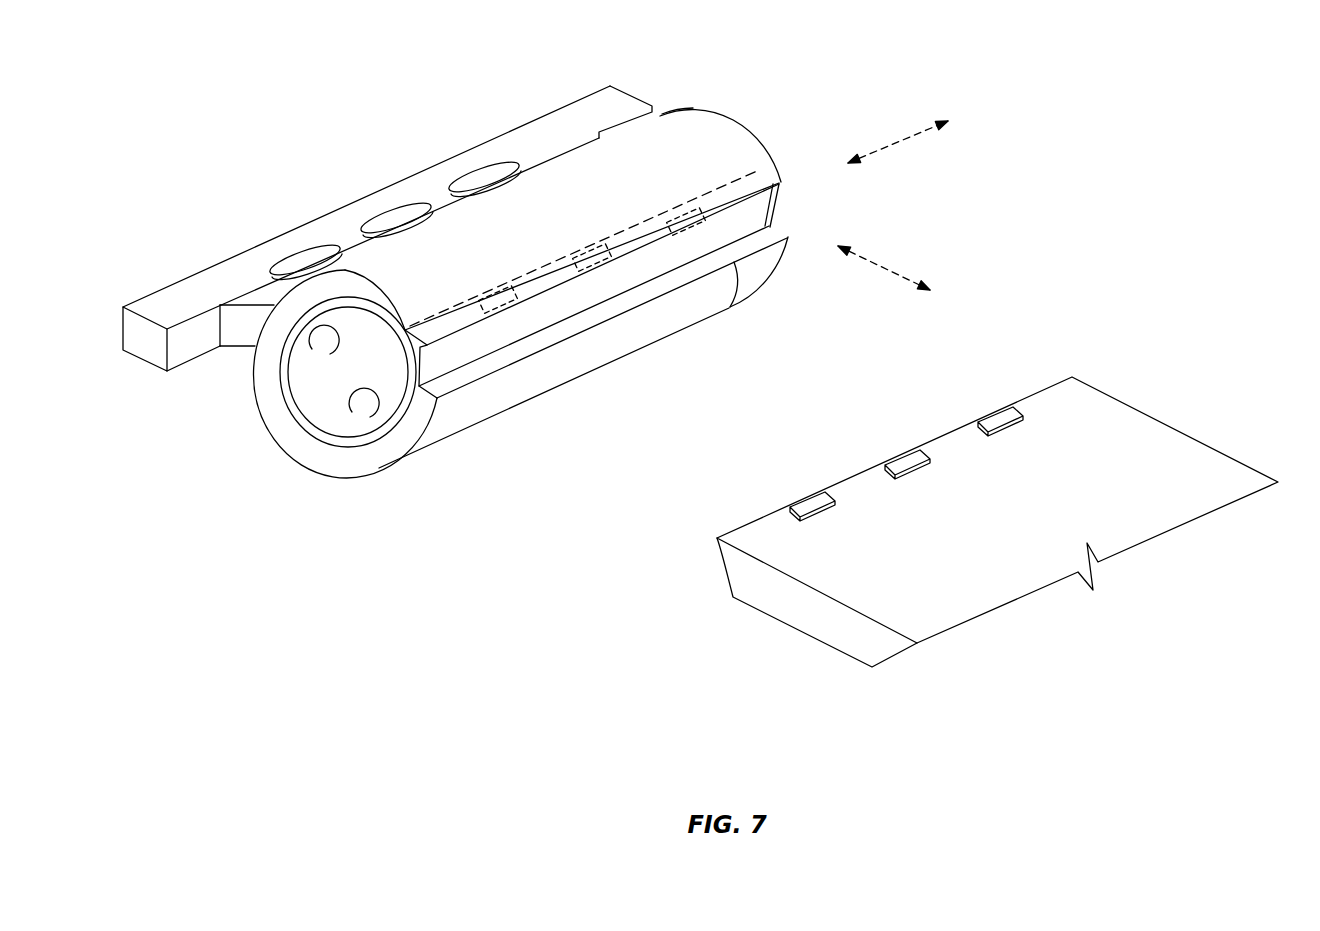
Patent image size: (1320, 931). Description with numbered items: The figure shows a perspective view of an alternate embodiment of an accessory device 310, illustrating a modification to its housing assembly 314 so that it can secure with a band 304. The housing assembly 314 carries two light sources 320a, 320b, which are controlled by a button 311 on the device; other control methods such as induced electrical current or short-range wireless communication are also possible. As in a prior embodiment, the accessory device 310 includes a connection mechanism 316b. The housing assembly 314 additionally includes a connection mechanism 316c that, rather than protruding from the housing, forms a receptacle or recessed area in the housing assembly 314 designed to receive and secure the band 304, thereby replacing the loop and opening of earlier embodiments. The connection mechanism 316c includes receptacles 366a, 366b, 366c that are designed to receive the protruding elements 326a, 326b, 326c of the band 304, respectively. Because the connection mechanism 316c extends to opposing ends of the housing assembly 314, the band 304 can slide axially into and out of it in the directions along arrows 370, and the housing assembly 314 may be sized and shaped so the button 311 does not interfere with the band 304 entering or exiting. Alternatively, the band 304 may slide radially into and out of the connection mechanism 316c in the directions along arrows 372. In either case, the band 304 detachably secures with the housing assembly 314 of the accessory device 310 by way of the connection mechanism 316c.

The accessory device 310 is at (308, 136).
The button 311 is at (784, 208).
The housing assembly 314 is at (660, 110).
The connection mechanism 316b is at (164, 290).
The connection mechanism 316c is at (740, 267).
The light source 320a is at (357, 420).
The light source 320b is at (317, 350).
The receptacle 366a is at (690, 222).
The receptacle 366b is at (595, 263).
The receptacle 366c is at (500, 305).
The arrows 370 is at (894, 128).
The arrows 372 is at (880, 244).
The band 304 is at (1143, 398).
The protruding element 326a is at (1000, 405).
The protruding element 326b is at (906, 450).
The protruding element 326c is at (812, 490).